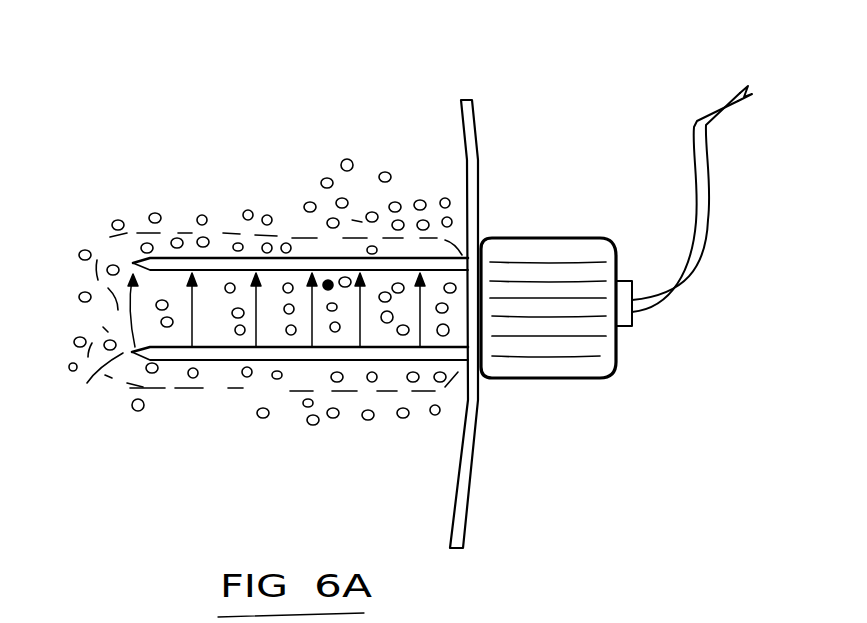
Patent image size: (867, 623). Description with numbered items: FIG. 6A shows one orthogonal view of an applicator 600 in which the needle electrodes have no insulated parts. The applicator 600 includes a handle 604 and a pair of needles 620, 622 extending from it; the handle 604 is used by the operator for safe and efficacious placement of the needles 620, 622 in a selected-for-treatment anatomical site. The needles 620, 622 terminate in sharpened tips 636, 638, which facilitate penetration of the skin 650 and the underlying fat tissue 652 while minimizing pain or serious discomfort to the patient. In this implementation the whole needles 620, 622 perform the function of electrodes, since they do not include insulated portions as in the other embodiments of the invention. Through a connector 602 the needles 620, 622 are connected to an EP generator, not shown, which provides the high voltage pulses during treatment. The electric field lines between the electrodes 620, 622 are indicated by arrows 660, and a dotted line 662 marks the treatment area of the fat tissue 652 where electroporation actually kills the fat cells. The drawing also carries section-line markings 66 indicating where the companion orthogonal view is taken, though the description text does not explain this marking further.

The applicator 600 is at (350, 97).
The connector 602 is at (712, 190).
The handle 604 is at (581, 390).
The needle 620 is at (302, 364).
The needle 622 is at (308, 260).
The sharpened tip 636 is at (133, 263).
The sharpened tip 638 is at (132, 352).
The skin 650 is at (478, 104).
The fat tissue 652 is at (357, 218).
The arrows 660 is at (363, 317).
The dotted line 662 is at (174, 236).
The section line 66 is at (257, 441).